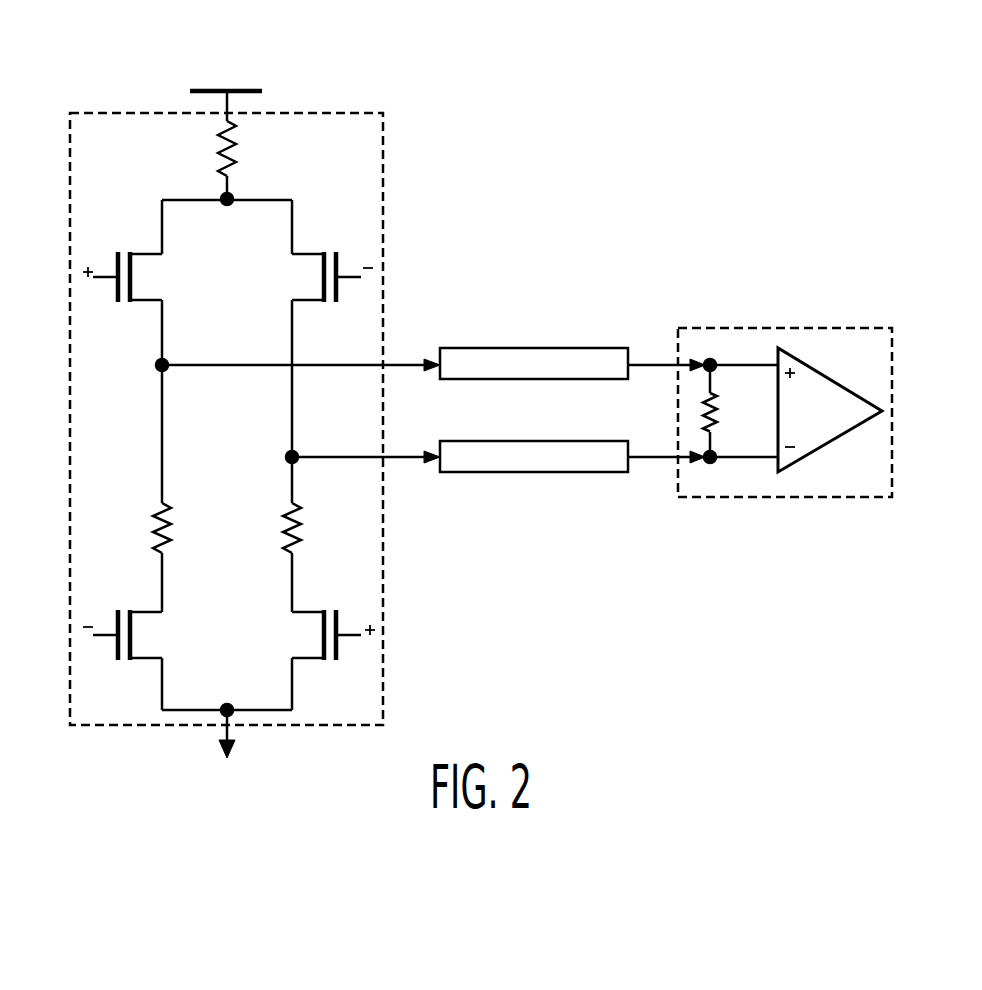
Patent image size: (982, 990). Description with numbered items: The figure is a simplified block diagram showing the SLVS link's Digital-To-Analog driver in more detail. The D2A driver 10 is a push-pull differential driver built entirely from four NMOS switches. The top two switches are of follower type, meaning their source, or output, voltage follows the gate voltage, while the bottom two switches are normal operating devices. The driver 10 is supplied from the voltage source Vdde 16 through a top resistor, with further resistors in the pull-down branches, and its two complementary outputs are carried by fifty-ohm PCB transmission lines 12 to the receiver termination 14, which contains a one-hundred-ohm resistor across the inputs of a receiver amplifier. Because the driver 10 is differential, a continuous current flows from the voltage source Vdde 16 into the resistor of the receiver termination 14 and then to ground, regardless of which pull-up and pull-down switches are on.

The D2A driver 10 is at (111, 708).
The PCB transmission lines 12 is at (636, 411).
The receiver termination 14 is at (704, 348).
The voltage source Vdde 16 is at (250, 83).